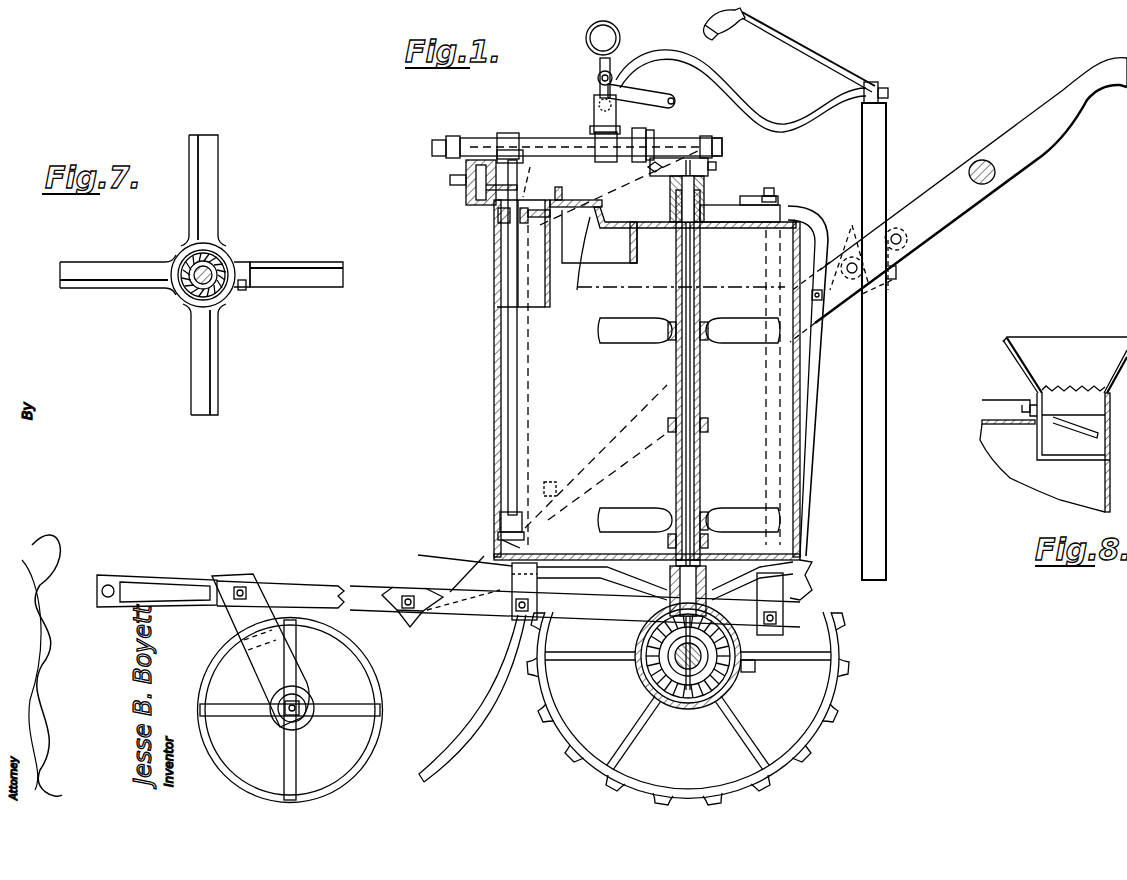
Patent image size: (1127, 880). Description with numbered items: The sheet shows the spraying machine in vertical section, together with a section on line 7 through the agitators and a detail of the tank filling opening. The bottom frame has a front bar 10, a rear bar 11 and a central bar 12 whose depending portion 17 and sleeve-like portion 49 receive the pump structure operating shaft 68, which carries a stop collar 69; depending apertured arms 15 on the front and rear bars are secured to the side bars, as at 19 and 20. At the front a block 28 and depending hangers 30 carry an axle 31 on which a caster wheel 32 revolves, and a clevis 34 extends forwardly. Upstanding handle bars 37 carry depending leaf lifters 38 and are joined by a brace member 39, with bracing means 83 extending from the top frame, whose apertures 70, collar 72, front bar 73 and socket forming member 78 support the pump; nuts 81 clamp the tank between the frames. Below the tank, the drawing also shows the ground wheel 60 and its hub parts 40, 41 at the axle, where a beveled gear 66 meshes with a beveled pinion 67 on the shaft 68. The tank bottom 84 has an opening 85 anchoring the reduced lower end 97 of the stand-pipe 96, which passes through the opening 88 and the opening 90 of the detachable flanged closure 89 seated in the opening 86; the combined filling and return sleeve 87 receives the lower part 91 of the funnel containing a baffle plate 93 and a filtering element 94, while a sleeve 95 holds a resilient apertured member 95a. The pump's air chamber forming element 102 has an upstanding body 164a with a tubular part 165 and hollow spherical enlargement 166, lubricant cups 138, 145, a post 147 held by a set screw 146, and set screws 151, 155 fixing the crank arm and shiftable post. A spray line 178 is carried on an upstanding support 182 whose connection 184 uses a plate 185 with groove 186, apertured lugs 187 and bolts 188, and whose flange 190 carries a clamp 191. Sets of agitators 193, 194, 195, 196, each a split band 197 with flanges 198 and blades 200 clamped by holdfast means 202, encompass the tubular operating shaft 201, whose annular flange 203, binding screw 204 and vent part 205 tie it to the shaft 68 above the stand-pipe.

In FIG. 1, the section line 7 is at (678, 287).
In FIG. 1, the front bar 10 is at (512, 578).
In FIG. 1, the rear bar 11 is at (810, 566).
In FIG. 1, the central bar 12 is at (575, 585).
In FIG. 1, the depending apertured arm 15 is at (806, 582).
In FIG. 1, the depending portion 17 is at (642, 575).
In FIG. 1, the securing point 19 is at (783, 618).
In FIG. 1, the securing point 20 is at (514, 606).
In FIG. 1, the block 28 is at (258, 580).
In FIG. 1, the depending hanger 30 is at (262, 664).
In FIG. 1, the axle 31 is at (300, 700).
In FIG. 1, the caster wheel 32 is at (378, 680).
In FIG. 1, the clevis 34 is at (155, 574).
In FIG. 1, the handle bar 37 is at (995, 138).
In FIG. 1, the leaf lifter 38 is at (486, 695).
In FIG. 1, the brace member 39 is at (998, 178).
In FIG. 1, the axle nut 40 is at (748, 648).
In FIG. 1, the hub flange 41 is at (736, 692).
In FIG. 1, the sleeve-like portion 49 is at (710, 598).
In FIG. 1, the drive wheel 60 is at (814, 728).
In FIG. 1, the beveled gear 66 is at (685, 690).
In FIG. 1, the beveled pinion 67 is at (637, 638).
In FIG. 1, the pump structure operating shaft 68 is at (690, 380).
In FIG. 1, the stop collar 69 is at (792, 220).
In FIG. 1, the aperture 70 is at (753, 222).
In FIG. 1, the collar 72 is at (704, 190).
In FIG. 1, the front bar 73 is at (546, 182).
In FIG. 1, the socket forming member 78 is at (497, 212).
In FIG. 1, the nut 81 is at (780, 162).
In FIG. 1, the bracing means 83 is at (810, 375).
In FIG. 1, the bottom 84 is at (558, 560).
In FIG. 1, the opening 85 is at (810, 596).
In FIG. 1, the opening 86 is at (580, 266).
In FIG. 1, the combined filling and return sleeve 87 is at (550, 258).
In FIG. 8, the combined filling and return sleeve 87 is at (1037, 440).
In FIG. 1, the opening 88 is at (580, 248).
In FIG. 1, the detachable flanged closure 89 is at (599, 236).
In FIG. 1, the opening 90 is at (712, 228).
In FIG. 8, the lower part of funnel 91 is at (1106, 410).
In FIG. 8, the baffle plate 93 is at (1080, 436).
In FIG. 8, the filtering element 94 is at (1058, 388).
In FIG. 1, the sleeve 95 is at (517, 312).
In FIG. 1, the resilient apertured member 95a is at (500, 228).
In FIG. 1, the stand-pipe 96 is at (676, 470).
In FIG. 1, the reduced lower end 97 is at (668, 598).
In FIG. 1, the air chamber forming element 102 is at (618, 112).
In FIG. 1, the lubricant cup 138 is at (432, 146).
In FIG. 1, the lubricant cup 145 is at (700, 145).
In FIG. 1, the set screw 146 is at (450, 180).
In FIG. 1, the post 147 is at (478, 190).
In FIG. 1, the set screw 151 is at (722, 164).
In FIG. 1, the set screw 155 is at (680, 145).
In FIG. 1, the upstanding body 164a is at (612, 60).
In FIG. 1, the tubular part 165 is at (596, 96).
In FIG. 1, the hollow spherical enlargement 166 is at (620, 28).
In FIG. 1, the spray line 178 is at (820, 62).
In FIG. 1, the upstanding support 182 is at (896, 430).
In FIG. 1, the connection 184 is at (898, 228).
In FIG. 1, the plate 185 is at (856, 235).
In FIG. 1, the groove 186 is at (897, 268).
In FIG. 1, the apertured lug 187 is at (895, 250).
In FIG. 1, the bolt 188 is at (822, 300).
In FIG. 1, the flange 190 is at (870, 108).
In FIG. 1, the clamp 191 is at (880, 84).
In FIG. 1, the set of agitators 193 is at (628, 330).
In FIG. 1, the set of agitators 194 is at (710, 427).
In FIG. 1, the set of agitators 195 is at (733, 512).
In FIG. 1, the set of agitators 196 is at (710, 539).
In FIG. 7, the split band 197 is at (180, 296).
In FIG. 7, the flange 198 is at (248, 266).
In FIG. 7, the blade 200 is at (210, 188).
In FIG. 1, the tubular operating shaft 201 is at (676, 360).
In FIG. 7, the tubular operating shaft 201 is at (190, 302).
In FIG. 7, the holdfast means 202 is at (250, 288).
In FIG. 1, the annular flange 203 is at (637, 232).
In FIG. 1, the binding screw 204 is at (742, 198).
In FIG. 1, the vent part 205 is at (705, 218).